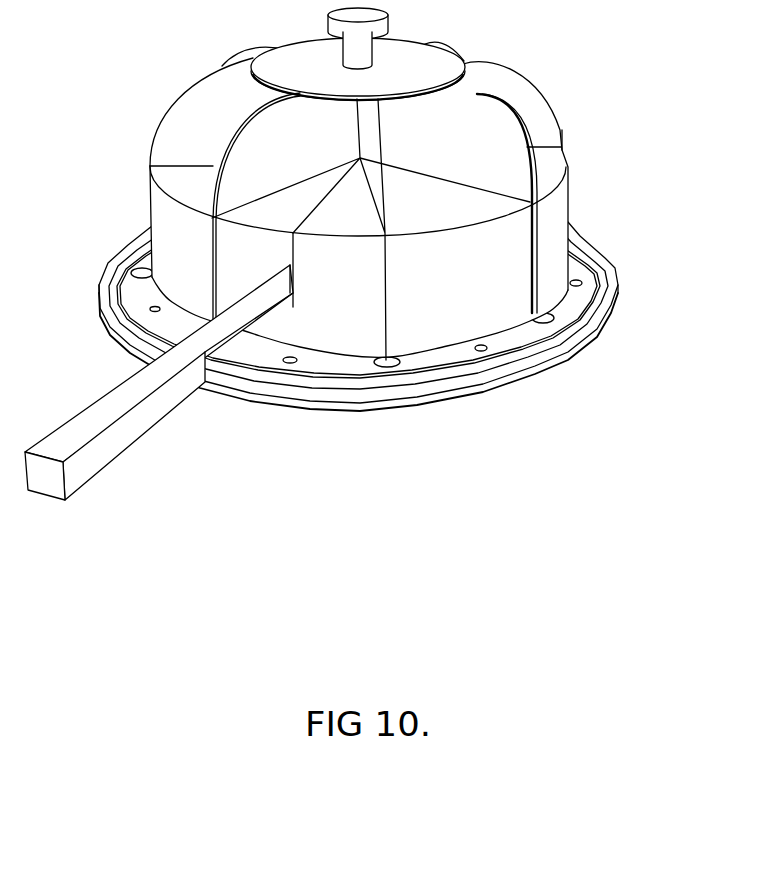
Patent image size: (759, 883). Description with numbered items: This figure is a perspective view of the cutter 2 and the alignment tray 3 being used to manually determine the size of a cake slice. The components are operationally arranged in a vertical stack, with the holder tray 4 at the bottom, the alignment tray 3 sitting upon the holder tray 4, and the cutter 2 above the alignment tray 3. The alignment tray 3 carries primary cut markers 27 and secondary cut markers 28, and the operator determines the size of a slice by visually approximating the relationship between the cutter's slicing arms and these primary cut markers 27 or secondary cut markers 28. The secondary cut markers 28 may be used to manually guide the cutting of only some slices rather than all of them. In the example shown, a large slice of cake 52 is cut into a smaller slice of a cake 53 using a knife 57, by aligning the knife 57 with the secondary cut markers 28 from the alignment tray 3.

The cutter 2 is at (553, 92).
The alignment tray 3 is at (580, 272).
The holder tray 4 is at (613, 308).
The primary cut markers 27 is at (388, 365).
The secondary cut markers 28 is at (296, 360).
The large slice of cake 52 is at (445, 209).
The smaller slice of a cake 53 is at (237, 243).
The knife 57 is at (253, 313).